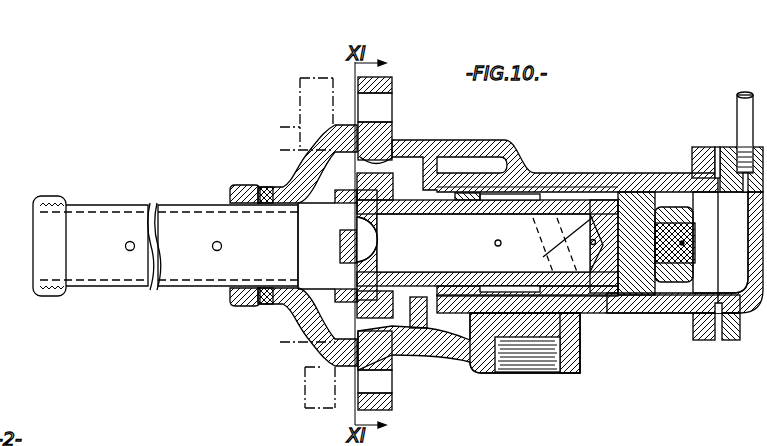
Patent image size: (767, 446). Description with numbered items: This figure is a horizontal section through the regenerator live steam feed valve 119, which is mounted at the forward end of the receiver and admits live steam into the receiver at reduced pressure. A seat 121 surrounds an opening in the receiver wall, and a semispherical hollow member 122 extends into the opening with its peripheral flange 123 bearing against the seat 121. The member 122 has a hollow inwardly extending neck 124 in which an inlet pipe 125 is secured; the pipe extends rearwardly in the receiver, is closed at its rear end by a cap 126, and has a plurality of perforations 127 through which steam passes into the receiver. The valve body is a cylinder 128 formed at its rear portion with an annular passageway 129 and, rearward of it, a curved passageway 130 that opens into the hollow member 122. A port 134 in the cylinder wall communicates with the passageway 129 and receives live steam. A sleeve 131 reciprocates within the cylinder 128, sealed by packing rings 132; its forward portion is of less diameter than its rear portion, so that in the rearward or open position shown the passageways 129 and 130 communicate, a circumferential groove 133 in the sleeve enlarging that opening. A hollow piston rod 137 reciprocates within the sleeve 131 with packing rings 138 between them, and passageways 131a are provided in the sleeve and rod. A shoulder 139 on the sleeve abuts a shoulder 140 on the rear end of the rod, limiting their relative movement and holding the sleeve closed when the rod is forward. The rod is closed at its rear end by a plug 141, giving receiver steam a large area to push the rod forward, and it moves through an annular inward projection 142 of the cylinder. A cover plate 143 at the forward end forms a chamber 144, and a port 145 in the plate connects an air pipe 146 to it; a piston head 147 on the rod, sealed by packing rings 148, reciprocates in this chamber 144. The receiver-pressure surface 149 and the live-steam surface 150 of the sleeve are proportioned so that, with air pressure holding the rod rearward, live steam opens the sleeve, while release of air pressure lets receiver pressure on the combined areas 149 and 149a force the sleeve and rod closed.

The regenerator live steam feed valve 119 is at (520, 160).
The seat 121 is at (335, 130).
The semispherical hollow member 122 is at (292, 167).
The peripheral flange 123 is at (343, 366).
The neck 124 is at (270, 303).
The inlet pipe 125 is at (127, 287).
The cap 126 is at (50, 198).
The perforations 127 is at (165, 189).
The cylinder 128 is at (580, 333).
The annular passageway 129 is at (467, 162).
The curved passageway 130 is at (392, 323).
The sleeve 131 is at (550, 197).
The passageways 131a is at (492, 165).
The packing rings 132 is at (520, 357).
The circumferential groove 133 is at (423, 275).
The port 134 is at (555, 380).
The hollow piston rod 137 is at (425, 215).
The packing rings 138 is at (465, 213).
The shoulder 139 is at (355, 278).
The shoulder 140 is at (330, 232).
The plug 141 is at (350, 248).
The annular inward projection 142 is at (600, 313).
The cover plate 143 is at (735, 340).
The chamber 144 is at (700, 207).
The port 145 is at (733, 160).
The air pipe 146 is at (738, 98).
The piston head 147 is at (660, 195).
The packing rings 148 is at (678, 320).
The surface 149 is at (330, 310).
The area 149a is at (262, 287).
The surface 150 is at (395, 190).